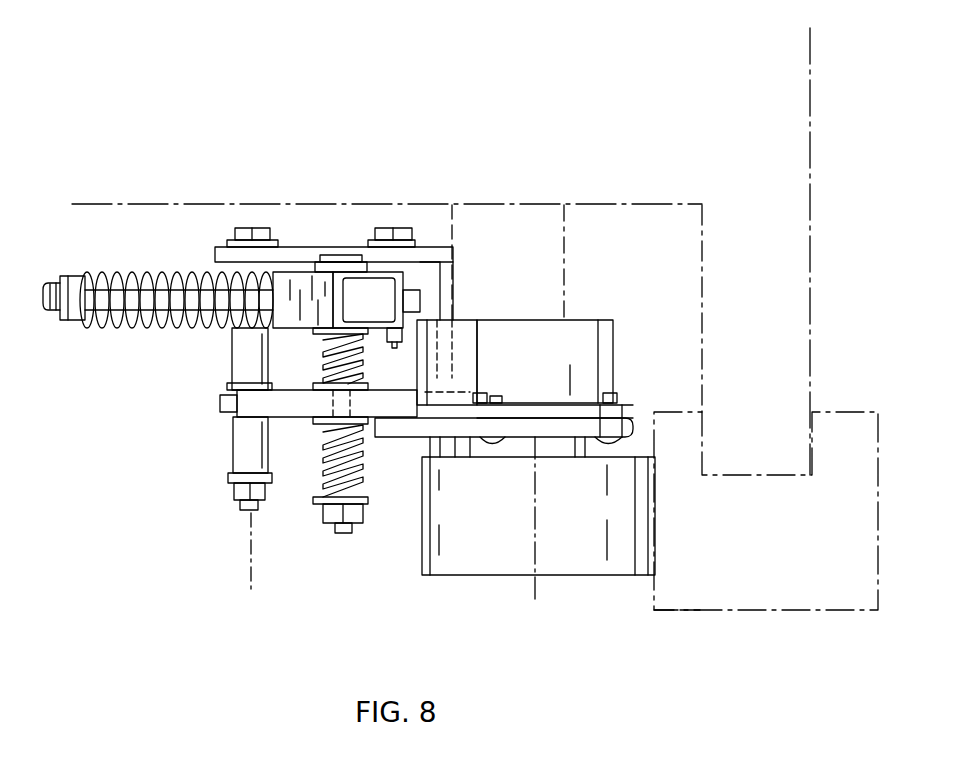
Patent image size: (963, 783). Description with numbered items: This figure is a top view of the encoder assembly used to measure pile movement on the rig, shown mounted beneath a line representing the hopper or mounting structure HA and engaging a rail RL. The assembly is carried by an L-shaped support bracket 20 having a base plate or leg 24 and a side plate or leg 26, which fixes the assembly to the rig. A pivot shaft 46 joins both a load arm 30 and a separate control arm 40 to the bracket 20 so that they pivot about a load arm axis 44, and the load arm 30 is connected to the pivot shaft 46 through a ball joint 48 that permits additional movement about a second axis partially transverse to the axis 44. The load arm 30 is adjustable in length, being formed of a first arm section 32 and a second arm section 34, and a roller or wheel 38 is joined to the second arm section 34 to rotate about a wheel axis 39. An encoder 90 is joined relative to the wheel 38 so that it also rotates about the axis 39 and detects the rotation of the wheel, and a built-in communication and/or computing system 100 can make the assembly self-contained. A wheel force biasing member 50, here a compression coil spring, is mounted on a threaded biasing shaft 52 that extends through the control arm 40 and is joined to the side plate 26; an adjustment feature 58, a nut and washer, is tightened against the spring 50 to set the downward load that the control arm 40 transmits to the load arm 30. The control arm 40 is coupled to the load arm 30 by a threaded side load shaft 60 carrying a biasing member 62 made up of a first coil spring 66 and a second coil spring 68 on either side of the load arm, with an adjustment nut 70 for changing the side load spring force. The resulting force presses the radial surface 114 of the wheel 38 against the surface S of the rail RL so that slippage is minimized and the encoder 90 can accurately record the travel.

The hopper assembly HA is at (138, 204).
The rail RL is at (777, 611).
The surface S is at (655, 607).
The support bracket 20 is at (430, 247).
The base plate or leg 24 is at (447, 273).
The side plate or leg 26 is at (290, 250).
The load arm 30 is at (390, 390).
The first arm section 32 is at (290, 418).
The second arm section 34 is at (397, 430).
The roller or wheel 38 is at (455, 570).
The wheel axis 39 is at (540, 583).
The control arm 40 is at (297, 280).
The load arm axis 44 is at (251, 588).
The pivot shaft 46 is at (230, 362).
The ball joint 48 is at (222, 404).
The wheel force biasing member 50 is at (142, 330).
The biasing shaft 52 is at (56, 312).
The adjustment feature 58 is at (76, 322).
The side load shaft 60 is at (320, 528).
The biasing member 62 is at (369, 458).
The first coil spring 66 is at (327, 358).
The second coil spring 68 is at (325, 465).
The adjustment nut 70 is at (355, 522).
The encoder 90 is at (603, 355).
The communication system and/or computing system 100 is at (462, 328).
The radial surface 114 is at (497, 548).